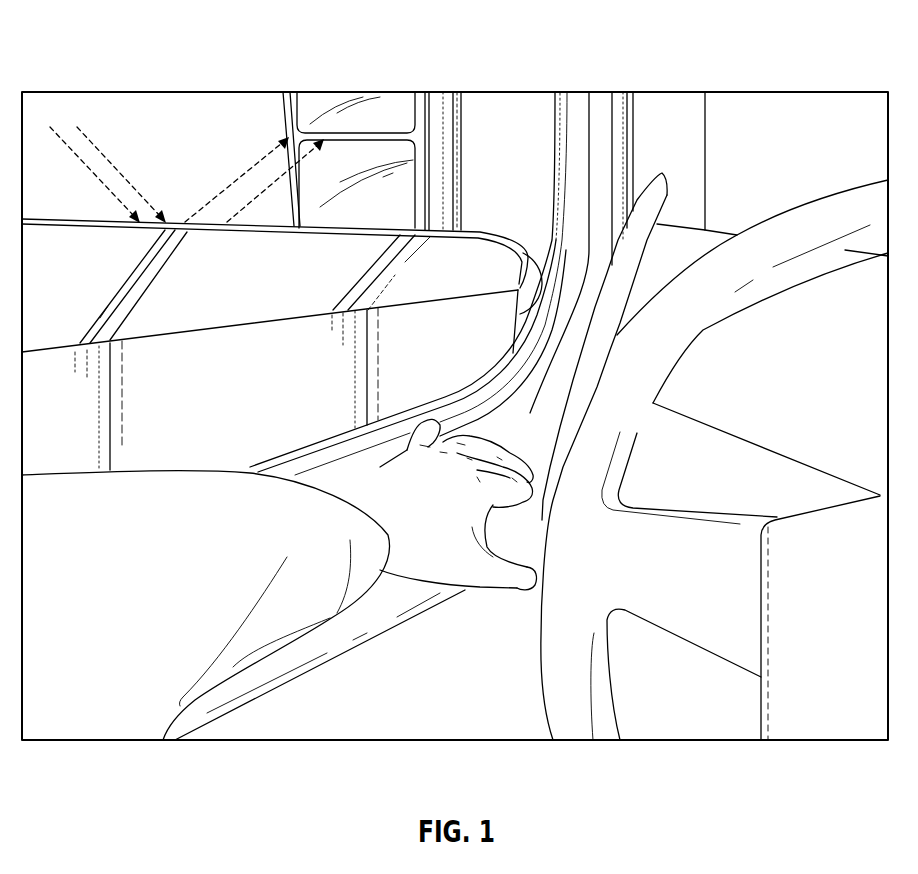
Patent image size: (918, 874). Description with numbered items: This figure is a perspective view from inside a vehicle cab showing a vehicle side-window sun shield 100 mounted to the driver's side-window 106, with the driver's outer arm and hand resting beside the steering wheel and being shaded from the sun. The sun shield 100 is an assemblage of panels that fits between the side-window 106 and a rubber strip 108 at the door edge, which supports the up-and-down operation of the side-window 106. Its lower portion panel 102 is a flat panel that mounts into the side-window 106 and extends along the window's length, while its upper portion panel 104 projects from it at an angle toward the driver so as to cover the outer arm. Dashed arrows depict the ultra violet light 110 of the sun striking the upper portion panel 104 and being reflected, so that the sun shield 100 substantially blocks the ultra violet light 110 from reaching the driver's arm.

The vehicle side-window sun shield 100 is at (178, 124).
The lower portion panel 102 is at (521, 322).
The upper portion panel 104 is at (478, 227).
The side-window 106 is at (510, 138).
The rubber strip 108 is at (490, 403).
The ultra violet light 110 is at (258, 163).